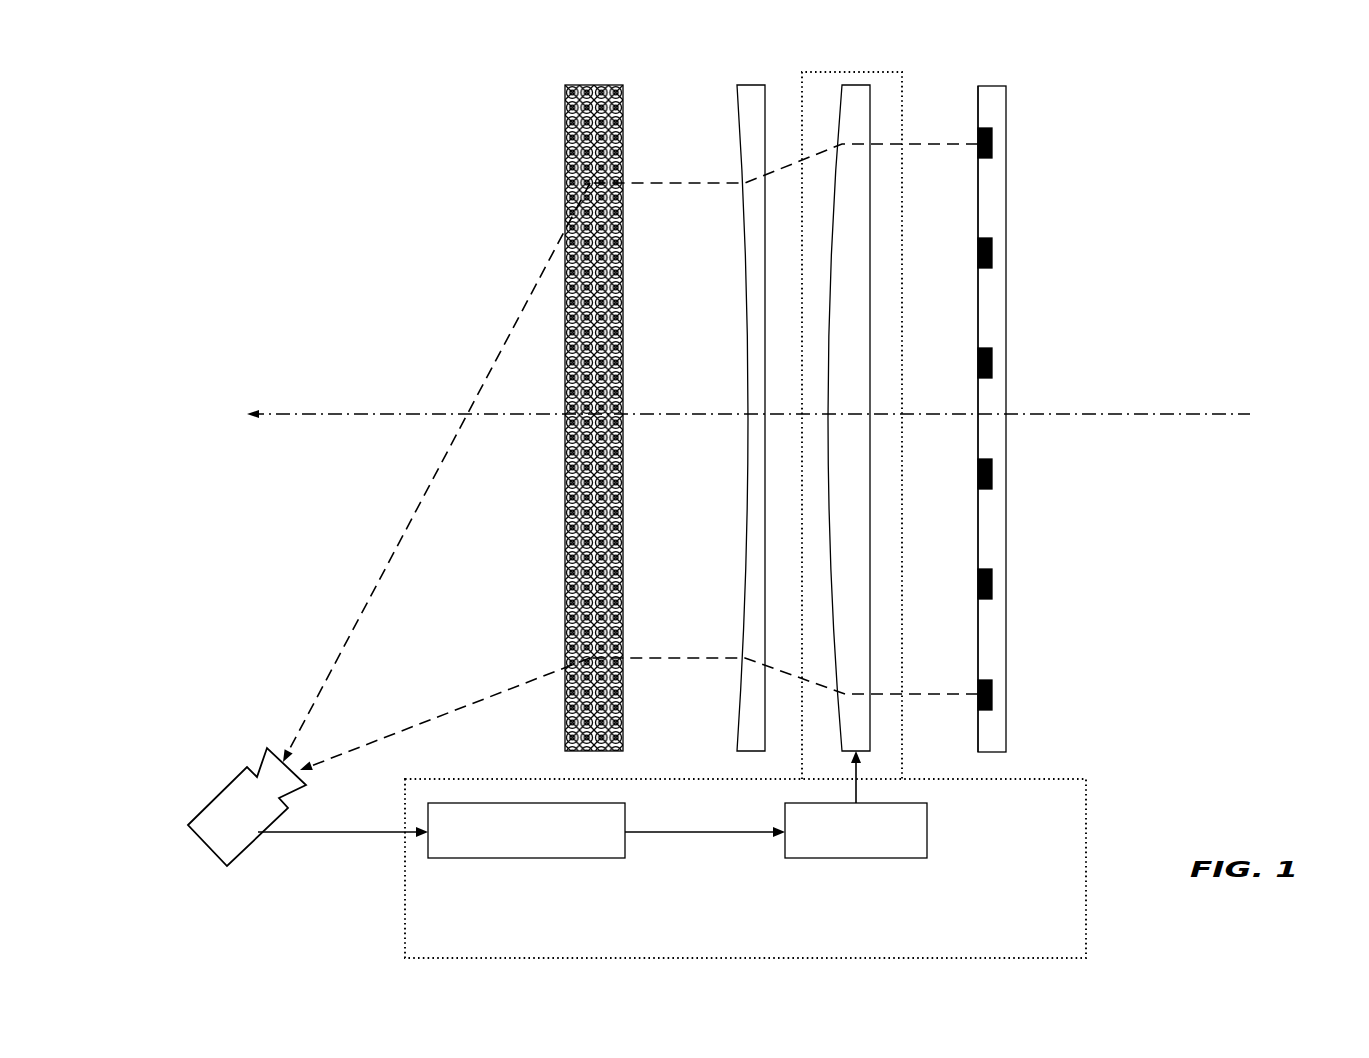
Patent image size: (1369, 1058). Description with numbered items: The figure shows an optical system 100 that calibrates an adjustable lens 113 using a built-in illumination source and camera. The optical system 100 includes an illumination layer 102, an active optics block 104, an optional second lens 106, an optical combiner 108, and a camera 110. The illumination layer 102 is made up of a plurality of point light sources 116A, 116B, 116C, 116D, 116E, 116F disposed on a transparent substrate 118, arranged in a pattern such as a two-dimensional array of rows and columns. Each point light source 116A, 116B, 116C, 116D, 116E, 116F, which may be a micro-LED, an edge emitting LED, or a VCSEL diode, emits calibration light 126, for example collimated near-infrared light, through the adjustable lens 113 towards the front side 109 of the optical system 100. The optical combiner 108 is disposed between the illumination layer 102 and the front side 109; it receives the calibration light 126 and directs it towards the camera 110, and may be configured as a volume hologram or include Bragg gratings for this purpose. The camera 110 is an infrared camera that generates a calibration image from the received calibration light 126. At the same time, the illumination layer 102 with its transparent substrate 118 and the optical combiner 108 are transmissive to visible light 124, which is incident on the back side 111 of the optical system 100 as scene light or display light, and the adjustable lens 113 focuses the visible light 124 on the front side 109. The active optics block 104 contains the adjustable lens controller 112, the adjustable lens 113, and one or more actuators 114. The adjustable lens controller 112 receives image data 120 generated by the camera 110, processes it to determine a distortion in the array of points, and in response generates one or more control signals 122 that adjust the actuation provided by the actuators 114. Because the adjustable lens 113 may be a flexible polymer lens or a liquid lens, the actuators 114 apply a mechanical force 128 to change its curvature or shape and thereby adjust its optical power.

The optical system 100 is at (1300, 130).
The illumination layer 102 is at (1000, 87).
The active optics block 104 is at (1073, 779).
The second lens 106 is at (748, 86).
The optical combiner 108 is at (602, 86).
The front side 109 is at (452, 324).
The camera 110 is at (207, 803).
The back side 111 is at (1233, 535).
The adjustable lens controller 112 is at (612, 808).
The adjustable lens 113 is at (853, 103).
The actuators 114 is at (928, 835).
The point light source 116A is at (978, 128).
The point light source 116B is at (978, 238).
The point light source 116C is at (978, 348).
The point light source 116D is at (978, 459).
The point light source 116E is at (978, 569).
The point light source 116F is at (978, 680).
The transparent substrate 118 is at (1000, 298).
The image data 120 is at (315, 832).
The control signals 122 is at (697, 833).
The visible light 124 is at (1166, 414).
The calibration light 126 is at (652, 658).
The mechanical force 128 is at (858, 790).